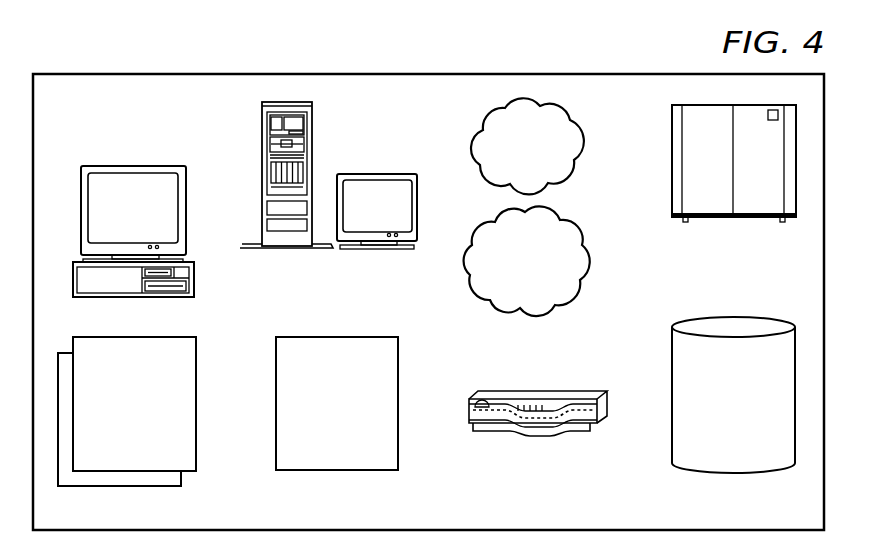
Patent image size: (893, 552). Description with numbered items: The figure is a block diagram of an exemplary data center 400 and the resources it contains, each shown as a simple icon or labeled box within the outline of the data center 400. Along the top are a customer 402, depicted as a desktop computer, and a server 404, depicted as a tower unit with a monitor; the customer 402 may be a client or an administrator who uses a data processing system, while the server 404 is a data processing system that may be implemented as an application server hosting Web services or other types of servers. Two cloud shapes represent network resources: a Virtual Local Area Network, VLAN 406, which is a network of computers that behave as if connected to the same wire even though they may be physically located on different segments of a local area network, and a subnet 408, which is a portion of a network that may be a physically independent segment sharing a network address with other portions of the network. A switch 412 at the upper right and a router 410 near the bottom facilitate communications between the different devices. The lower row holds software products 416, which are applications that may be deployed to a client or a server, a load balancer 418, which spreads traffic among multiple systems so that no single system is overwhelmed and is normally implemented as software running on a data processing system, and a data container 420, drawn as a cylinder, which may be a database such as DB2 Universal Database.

The data center 400 is at (201, 69).
The customer 402 is at (132, 165).
The server 404 is at (376, 174).
The Virtual Local Area Network (VLAN) 406 is at (573, 128).
The subnet 408 is at (565, 300).
The router 410 is at (562, 432).
The switch 412 is at (753, 221).
The software products 416 is at (153, 444).
The load balancer 418 is at (357, 444).
The data container 420 is at (752, 444).